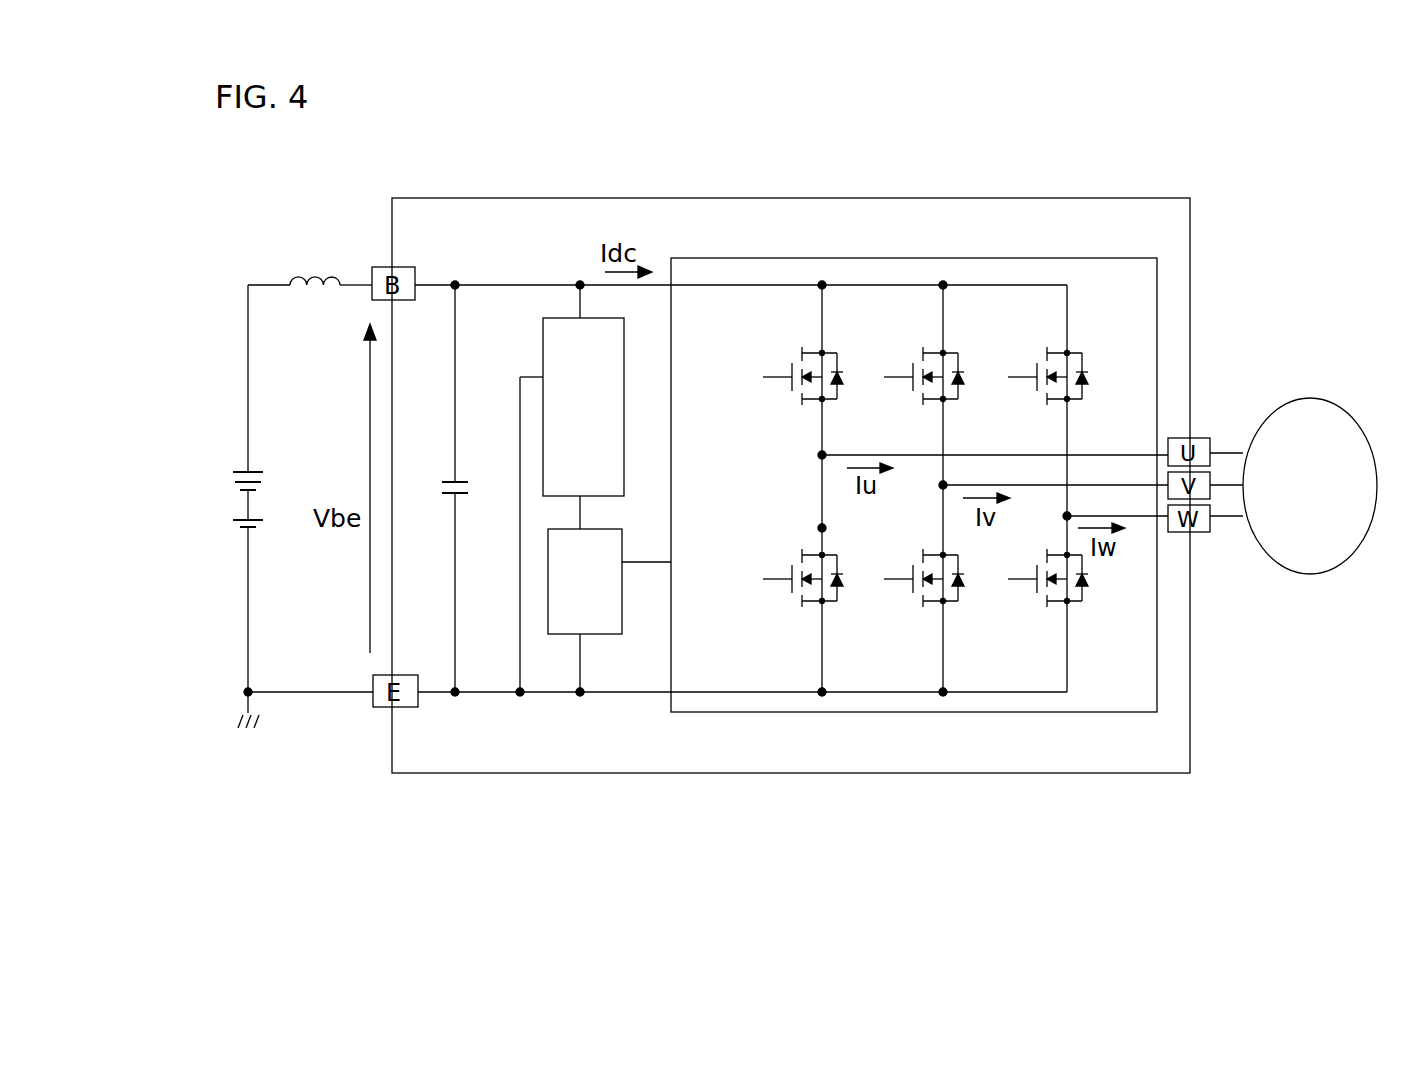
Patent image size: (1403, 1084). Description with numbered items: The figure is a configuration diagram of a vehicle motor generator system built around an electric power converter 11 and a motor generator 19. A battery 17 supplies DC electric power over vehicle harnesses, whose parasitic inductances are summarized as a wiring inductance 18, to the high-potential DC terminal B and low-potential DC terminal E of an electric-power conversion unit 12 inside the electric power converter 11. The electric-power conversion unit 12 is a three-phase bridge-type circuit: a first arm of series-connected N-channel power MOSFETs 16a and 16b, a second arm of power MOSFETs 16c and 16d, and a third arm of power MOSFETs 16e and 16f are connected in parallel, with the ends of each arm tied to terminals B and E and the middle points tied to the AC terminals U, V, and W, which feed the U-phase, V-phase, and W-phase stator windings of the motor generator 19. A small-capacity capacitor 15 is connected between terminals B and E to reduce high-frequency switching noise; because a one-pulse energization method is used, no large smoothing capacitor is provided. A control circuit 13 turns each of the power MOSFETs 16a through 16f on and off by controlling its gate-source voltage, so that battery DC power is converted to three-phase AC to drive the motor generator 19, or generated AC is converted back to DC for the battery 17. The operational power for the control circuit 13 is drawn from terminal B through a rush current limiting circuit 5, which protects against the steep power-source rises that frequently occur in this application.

The rush current limiting circuit 5 is at (628, 380).
The electric power converter 11 is at (760, 185).
The electric-power conversion unit 12 is at (906, 247).
The control circuit 13 is at (612, 528).
The capacitor 15 is at (462, 472).
The power MOSFET 16a is at (838, 348).
The power MOSFET 16b is at (838, 608).
The power MOSFET 16c is at (960, 348).
The power MOSFET 16d is at (960, 608).
The power MOSFET 16e is at (1082, 348).
The power MOSFET 16f is at (1084, 608).
The battery 17 is at (253, 466).
The wiring inductance 18 is at (310, 268).
The motor generator 19 is at (1305, 396).